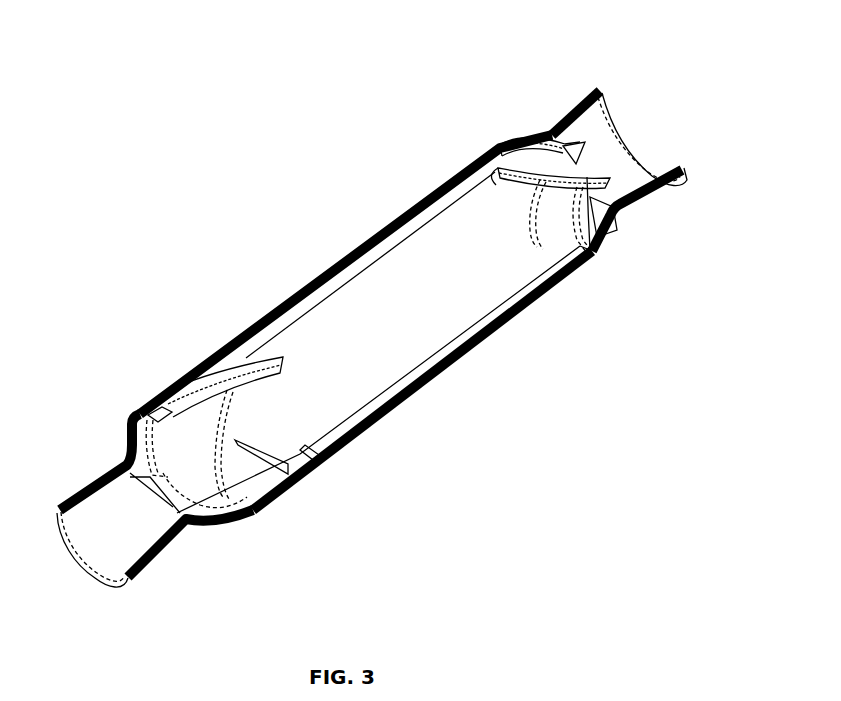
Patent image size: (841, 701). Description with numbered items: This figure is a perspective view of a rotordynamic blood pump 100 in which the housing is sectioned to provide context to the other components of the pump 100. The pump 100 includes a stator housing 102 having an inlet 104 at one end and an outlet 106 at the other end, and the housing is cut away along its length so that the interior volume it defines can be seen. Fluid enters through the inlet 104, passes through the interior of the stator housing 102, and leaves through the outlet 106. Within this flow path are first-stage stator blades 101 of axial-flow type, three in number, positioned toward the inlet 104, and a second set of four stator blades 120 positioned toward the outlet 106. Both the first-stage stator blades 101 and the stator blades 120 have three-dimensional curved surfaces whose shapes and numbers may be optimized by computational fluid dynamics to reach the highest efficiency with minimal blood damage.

The rotordynamic blood pump 100 is at (471, 36).
The first-stage stator blades 101 is at (290, 467).
The stator housing 102 is at (389, 410).
The inlet 104 is at (71, 566).
The outlet 106 is at (663, 151).
The stator blades 120 is at (552, 147).